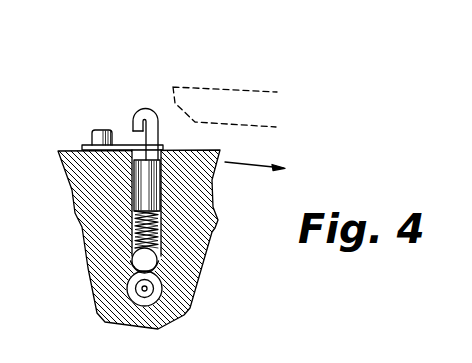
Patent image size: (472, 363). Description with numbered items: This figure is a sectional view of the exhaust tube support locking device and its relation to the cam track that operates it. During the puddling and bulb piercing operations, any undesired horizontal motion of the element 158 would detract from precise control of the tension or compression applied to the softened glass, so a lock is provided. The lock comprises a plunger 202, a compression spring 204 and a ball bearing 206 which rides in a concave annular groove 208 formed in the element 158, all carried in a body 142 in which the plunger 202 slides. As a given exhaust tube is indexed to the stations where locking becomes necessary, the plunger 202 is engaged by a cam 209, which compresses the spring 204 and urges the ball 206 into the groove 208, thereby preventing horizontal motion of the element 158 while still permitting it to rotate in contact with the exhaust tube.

The body block 142 is at (97, 228).
The plunger 202 is at (134, 113).
The compression spring 204 is at (155, 229).
The ball bearing 206 is at (150, 263).
The concave annular groove 208 is at (154, 289).
The element 158 is at (162, 298).
The cam 209 is at (254, 90).